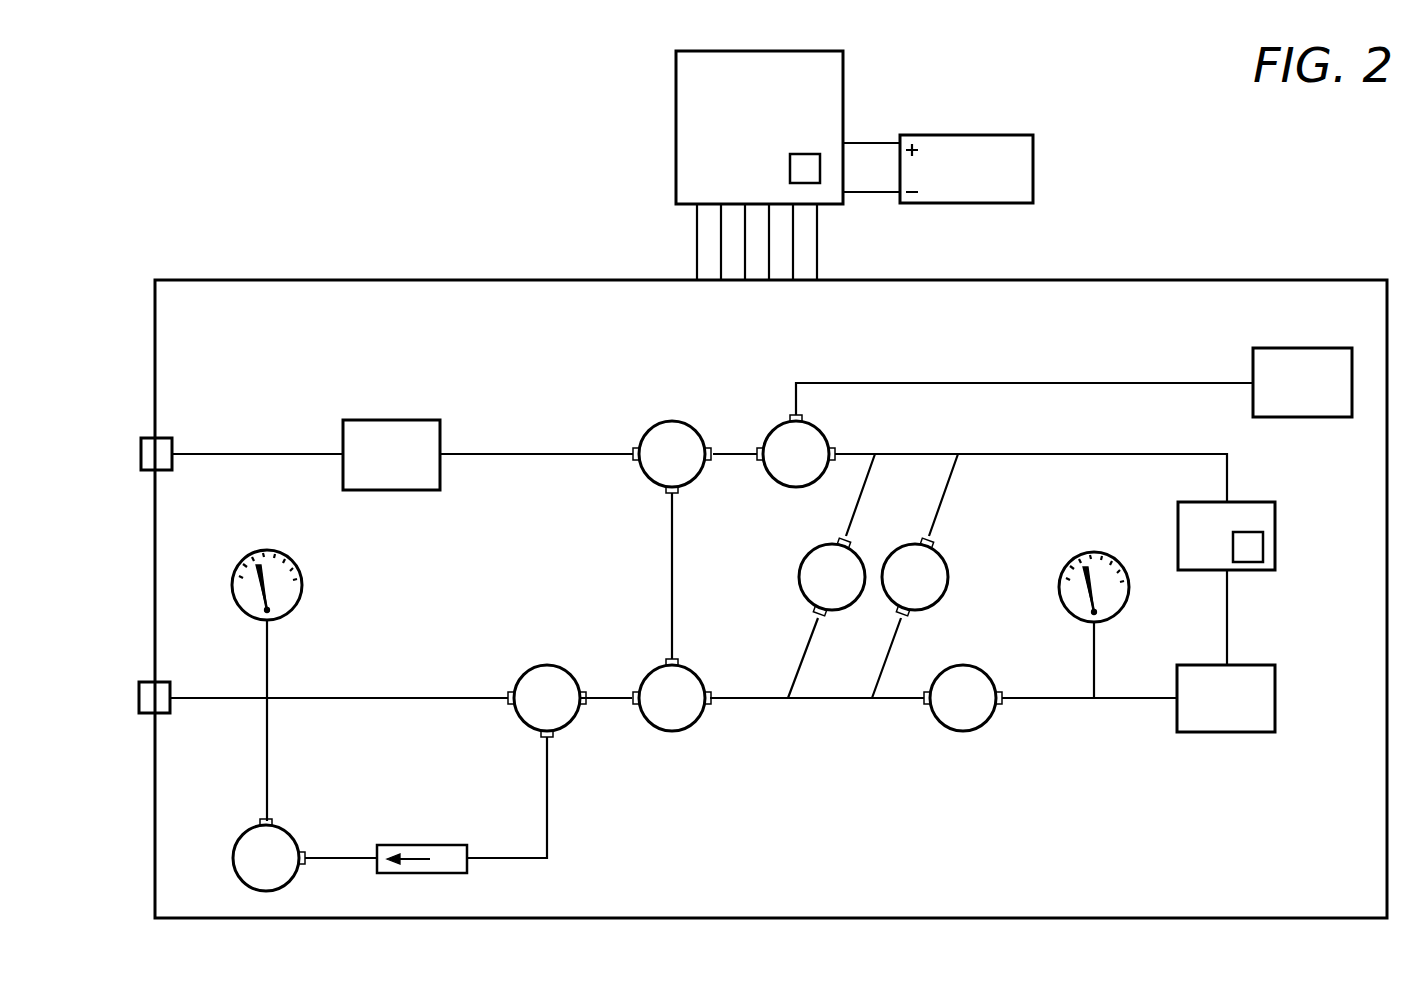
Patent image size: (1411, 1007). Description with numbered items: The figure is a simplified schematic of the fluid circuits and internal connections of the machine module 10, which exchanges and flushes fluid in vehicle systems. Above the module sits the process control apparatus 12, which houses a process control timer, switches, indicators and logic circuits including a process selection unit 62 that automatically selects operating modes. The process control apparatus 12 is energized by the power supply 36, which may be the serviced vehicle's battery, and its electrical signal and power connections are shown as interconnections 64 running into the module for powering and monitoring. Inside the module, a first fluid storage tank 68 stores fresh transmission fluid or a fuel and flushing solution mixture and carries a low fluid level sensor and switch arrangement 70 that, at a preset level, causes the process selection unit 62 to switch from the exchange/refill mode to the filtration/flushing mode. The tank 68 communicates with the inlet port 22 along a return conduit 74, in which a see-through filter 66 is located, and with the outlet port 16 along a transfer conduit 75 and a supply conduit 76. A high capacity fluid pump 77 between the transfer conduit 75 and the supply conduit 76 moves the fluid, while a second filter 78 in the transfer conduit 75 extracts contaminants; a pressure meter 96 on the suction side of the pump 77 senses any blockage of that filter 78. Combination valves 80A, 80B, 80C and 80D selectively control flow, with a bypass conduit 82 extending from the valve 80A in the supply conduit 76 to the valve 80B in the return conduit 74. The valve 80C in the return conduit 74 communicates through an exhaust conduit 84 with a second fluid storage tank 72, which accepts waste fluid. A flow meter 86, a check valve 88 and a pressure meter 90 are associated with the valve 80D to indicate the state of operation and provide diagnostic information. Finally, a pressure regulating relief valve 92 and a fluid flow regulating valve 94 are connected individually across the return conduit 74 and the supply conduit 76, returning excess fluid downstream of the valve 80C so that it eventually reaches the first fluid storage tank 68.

The machine module 10 is at (1340, 279).
The process control apparatus 12 is at (675, 68).
The outlet port 16 is at (152, 682).
The inlet port 22 is at (152, 438).
The power supply 36 is at (963, 135).
The process selection unit 62 is at (790, 175).
The interconnections 64 is at (720, 228).
The see-through filter 66 is at (388, 420).
The first fluid storage tank 68 is at (1177, 513).
The low fluid level sensor and switch arrangement 70 is at (1247, 532).
The second fluid storage tank 72 is at (1283, 347).
The return conduit 74 is at (258, 453).
The transfer conduit 75 is at (1225, 613).
The supply conduit 76 is at (377, 697).
The fluid pump 77 is at (977, 667).
The second filter 78 is at (1192, 664).
The combination valve 80A is at (653, 666).
The combination valve 80B is at (658, 421).
The combination valve 80C is at (775, 423).
The combination valve 80D is at (543, 664).
The bypass conduit 82 is at (668, 562).
The exhaust conduit 84 is at (1050, 382).
The flow meter 86 is at (443, 845).
The check valve 88 is at (245, 832).
The pressure meter 90 is at (263, 552).
The pressure regulating relief valve 92 is at (827, 543).
The fluid flow regulating valve 94 is at (915, 543).
The pressure meter 96 is at (1102, 552).